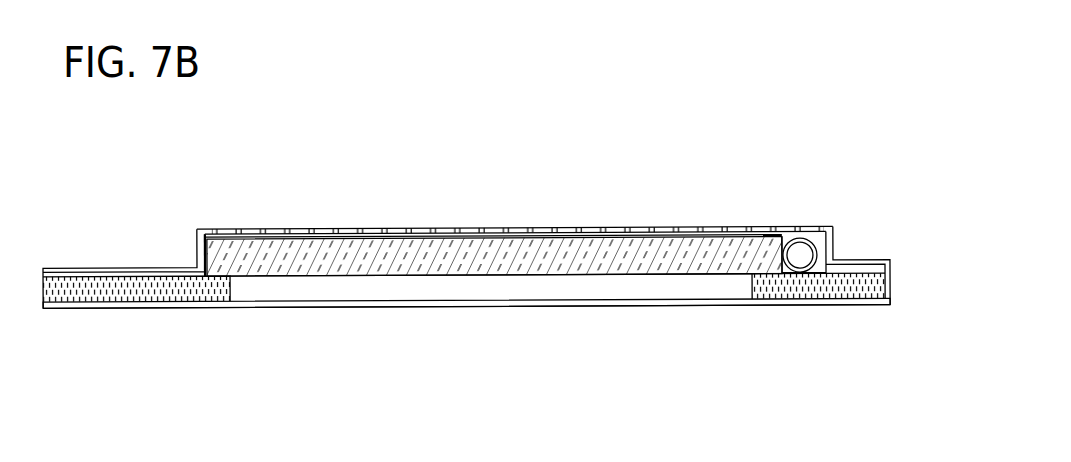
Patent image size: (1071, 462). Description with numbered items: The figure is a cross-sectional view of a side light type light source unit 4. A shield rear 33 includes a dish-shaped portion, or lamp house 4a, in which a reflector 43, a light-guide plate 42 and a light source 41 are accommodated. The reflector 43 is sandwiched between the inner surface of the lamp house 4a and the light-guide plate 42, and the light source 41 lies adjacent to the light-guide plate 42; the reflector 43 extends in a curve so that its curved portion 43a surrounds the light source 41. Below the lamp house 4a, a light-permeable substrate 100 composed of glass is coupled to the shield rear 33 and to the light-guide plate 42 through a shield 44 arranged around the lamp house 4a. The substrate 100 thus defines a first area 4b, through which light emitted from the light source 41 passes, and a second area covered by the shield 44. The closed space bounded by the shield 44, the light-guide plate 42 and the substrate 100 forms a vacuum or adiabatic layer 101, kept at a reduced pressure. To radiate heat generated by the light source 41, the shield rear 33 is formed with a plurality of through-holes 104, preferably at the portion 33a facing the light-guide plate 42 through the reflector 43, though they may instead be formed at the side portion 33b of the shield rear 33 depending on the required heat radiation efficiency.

The side light type light source unit 4 is at (454, 172).
The lamp house 4a is at (521, 240).
The first area 4b is at (403, 307).
The light source 41 is at (800, 255).
The light-guide plate 42 is at (298, 262).
The reflector 43 is at (373, 228).
The curved portion of the reflector 43a is at (822, 245).
The shield 44 is at (117, 291).
The shield rear 33 is at (862, 263).
The portion of the shield rear facing the light-guide plate 33a is at (692, 229).
The side portion of the shield rear 33b is at (197, 242).
The light-permeable substrate 100 is at (568, 305).
The vacuum or adiabatic layer 101 is at (293, 284).
The through-holes 104 is at (603, 233).